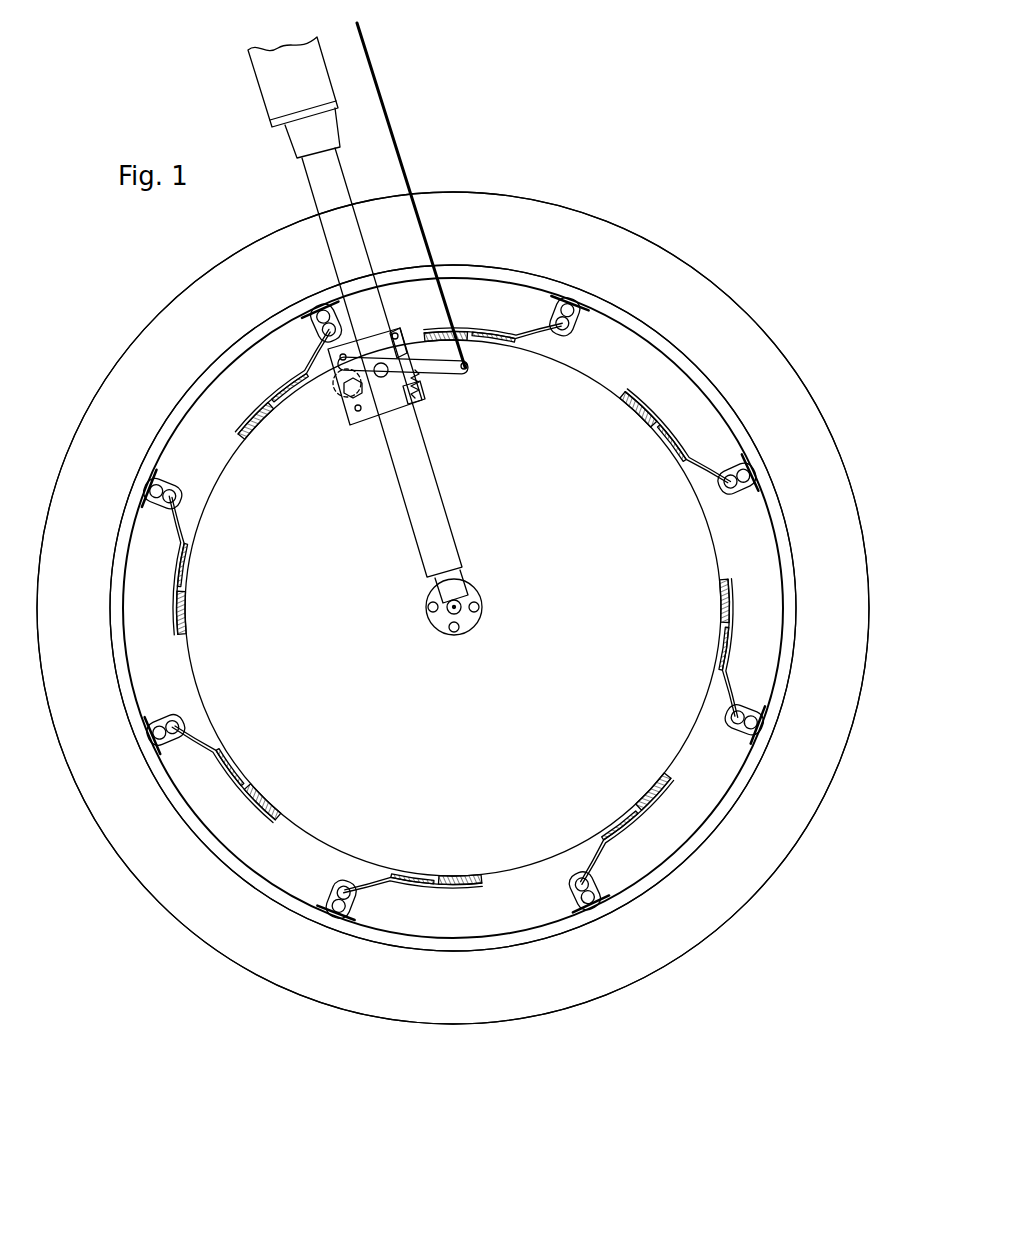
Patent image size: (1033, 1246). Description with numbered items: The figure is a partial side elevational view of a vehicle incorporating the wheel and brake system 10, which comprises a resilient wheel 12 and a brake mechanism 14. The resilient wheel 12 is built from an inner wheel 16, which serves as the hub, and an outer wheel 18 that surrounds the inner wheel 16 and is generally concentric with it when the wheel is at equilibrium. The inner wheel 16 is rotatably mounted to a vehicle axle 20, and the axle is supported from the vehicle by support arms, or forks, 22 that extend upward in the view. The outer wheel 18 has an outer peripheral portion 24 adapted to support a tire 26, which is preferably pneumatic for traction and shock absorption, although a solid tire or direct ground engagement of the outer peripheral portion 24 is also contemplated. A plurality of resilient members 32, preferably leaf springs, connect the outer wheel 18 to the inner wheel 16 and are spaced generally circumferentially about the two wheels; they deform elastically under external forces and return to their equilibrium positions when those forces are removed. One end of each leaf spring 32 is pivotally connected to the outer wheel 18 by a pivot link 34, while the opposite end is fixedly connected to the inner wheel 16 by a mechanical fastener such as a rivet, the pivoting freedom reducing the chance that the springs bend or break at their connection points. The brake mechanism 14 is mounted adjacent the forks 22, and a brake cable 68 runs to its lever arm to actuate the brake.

The wheel and brake system 10 is at (522, 105).
The resilient wheel 12 is at (668, 243).
The brake mechanism 14 is at (342, 425).
The inner wheel 16 is at (605, 353).
The outer wheel 18 is at (797, 377).
The vehicle axle 20 is at (457, 603).
The support arms 22 is at (323, 175).
The outer peripheral portion 24 is at (500, 263).
The tire 26 is at (548, 232).
The resilient members 32 is at (300, 372).
The pivot links 34 is at (306, 325).
The brake cable 68 is at (378, 88).